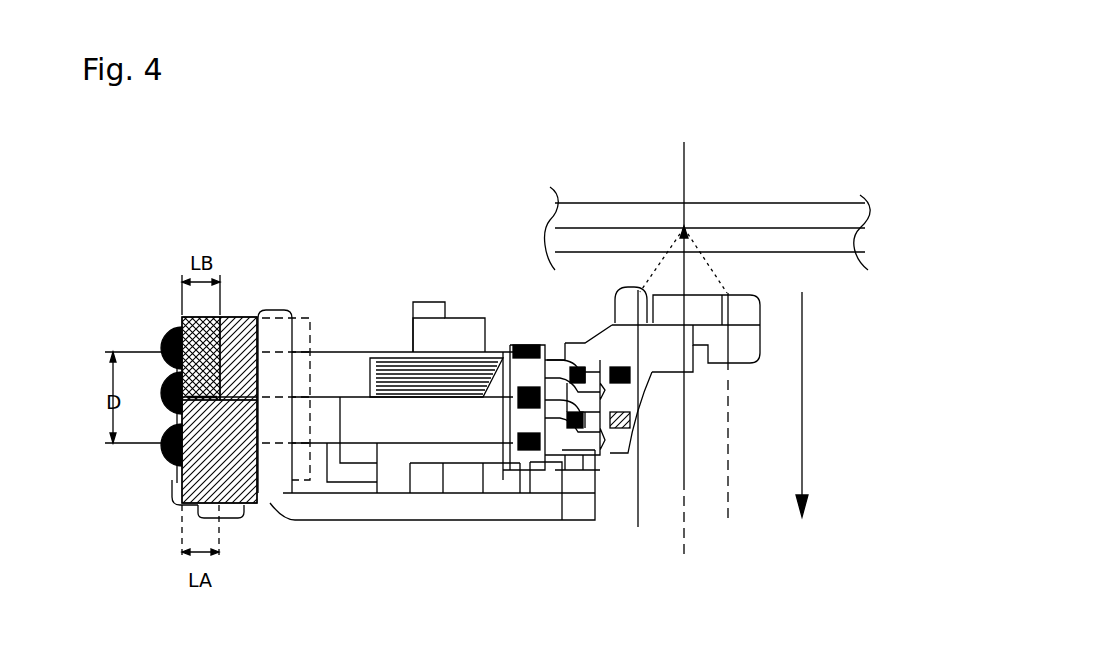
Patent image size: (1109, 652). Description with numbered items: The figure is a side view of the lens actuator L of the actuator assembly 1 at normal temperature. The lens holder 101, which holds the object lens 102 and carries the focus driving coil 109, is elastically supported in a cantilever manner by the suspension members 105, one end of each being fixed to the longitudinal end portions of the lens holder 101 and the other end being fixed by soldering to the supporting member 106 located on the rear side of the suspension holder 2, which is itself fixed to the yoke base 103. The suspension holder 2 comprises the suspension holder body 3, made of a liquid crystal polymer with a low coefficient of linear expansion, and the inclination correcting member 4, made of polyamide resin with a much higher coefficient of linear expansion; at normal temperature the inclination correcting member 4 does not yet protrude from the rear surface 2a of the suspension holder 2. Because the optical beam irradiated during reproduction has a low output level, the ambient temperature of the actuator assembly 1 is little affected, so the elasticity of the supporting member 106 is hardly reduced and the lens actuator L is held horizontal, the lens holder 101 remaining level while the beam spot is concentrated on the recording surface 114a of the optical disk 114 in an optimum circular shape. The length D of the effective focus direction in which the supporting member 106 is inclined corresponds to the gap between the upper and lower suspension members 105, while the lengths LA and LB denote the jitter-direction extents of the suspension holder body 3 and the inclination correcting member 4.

The actuator assembly 1 is at (183, 172).
The suspension holder 2 is at (237, 315).
The rear surface 2a is at (172, 484).
The suspension holder body 3 is at (232, 512).
The inclination correcting member 4 is at (187, 327).
The lens holder 101 is at (743, 353).
The object lens 102 is at (740, 293).
The yoke base 103 is at (460, 510).
The suspension members 105 is at (346, 395).
The supporting member 106 is at (177, 478).
The focus driving coil 109 is at (455, 375).
The optical disk 114 is at (738, 203).
The recording surface 114a is at (783, 227).
The lens actuator L is at (590, 528).